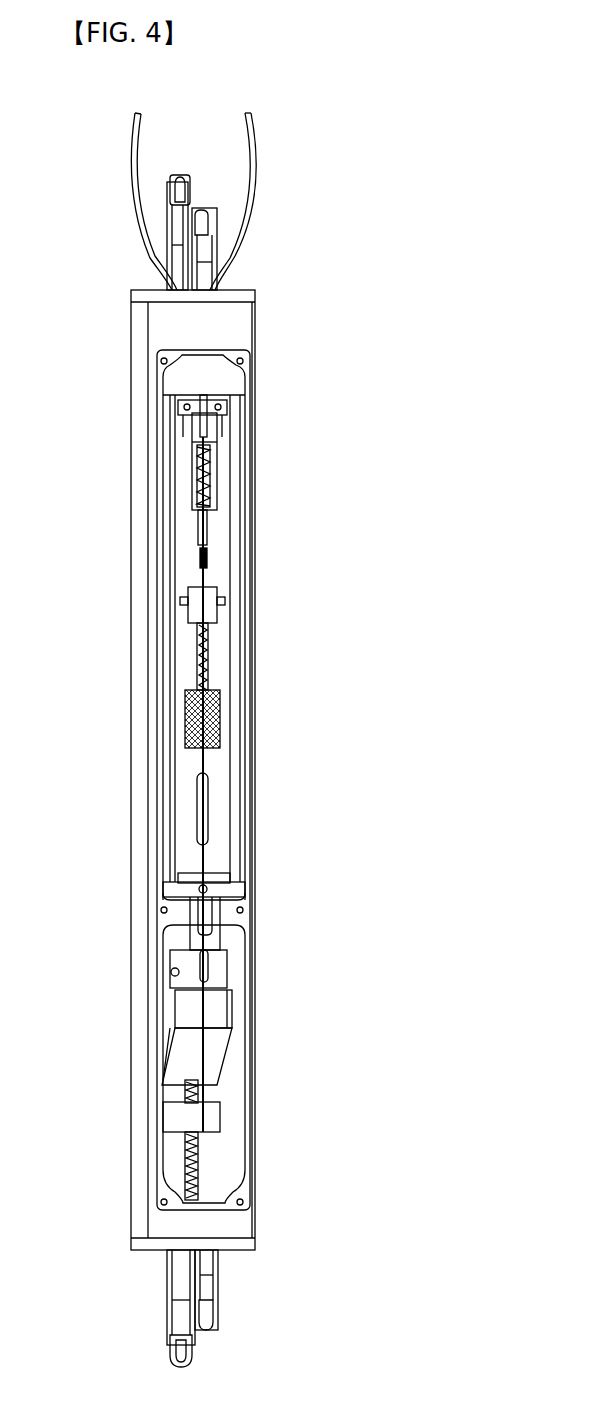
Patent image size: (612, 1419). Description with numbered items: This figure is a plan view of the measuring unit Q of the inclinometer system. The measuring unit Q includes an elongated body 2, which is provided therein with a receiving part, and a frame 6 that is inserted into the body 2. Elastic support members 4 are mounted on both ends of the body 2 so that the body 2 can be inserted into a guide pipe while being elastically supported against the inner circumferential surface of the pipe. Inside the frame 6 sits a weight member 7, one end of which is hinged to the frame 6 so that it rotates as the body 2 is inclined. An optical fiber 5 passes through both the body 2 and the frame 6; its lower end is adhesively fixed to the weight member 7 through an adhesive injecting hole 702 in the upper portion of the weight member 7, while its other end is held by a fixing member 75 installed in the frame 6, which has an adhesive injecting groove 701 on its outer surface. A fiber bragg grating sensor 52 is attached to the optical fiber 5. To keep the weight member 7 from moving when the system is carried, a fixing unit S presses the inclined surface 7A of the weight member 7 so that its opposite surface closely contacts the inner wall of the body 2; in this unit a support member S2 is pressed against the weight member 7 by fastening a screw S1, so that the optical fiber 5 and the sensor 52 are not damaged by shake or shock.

The measuring unit Q is at (393, 410).
The elastic support member 4 is at (220, 227).
The body 2 is at (247, 320).
The frame 6 is at (247, 487).
The optical fiber 5 is at (203, 540).
The fixing member 75 is at (215, 447).
The adhesive injecting groove 701 is at (198, 477).
The fiber bragg grating (FBG) sensor 52 is at (198, 557).
The adhesive injecting hole 702 is at (220, 717).
The weight member 7 is at (222, 1007).
The inclined surface 7A is at (217, 1050).
The fixing unit S is at (182, 1138).
The support member S2 is at (212, 1113).
The screw S1 is at (208, 1140).